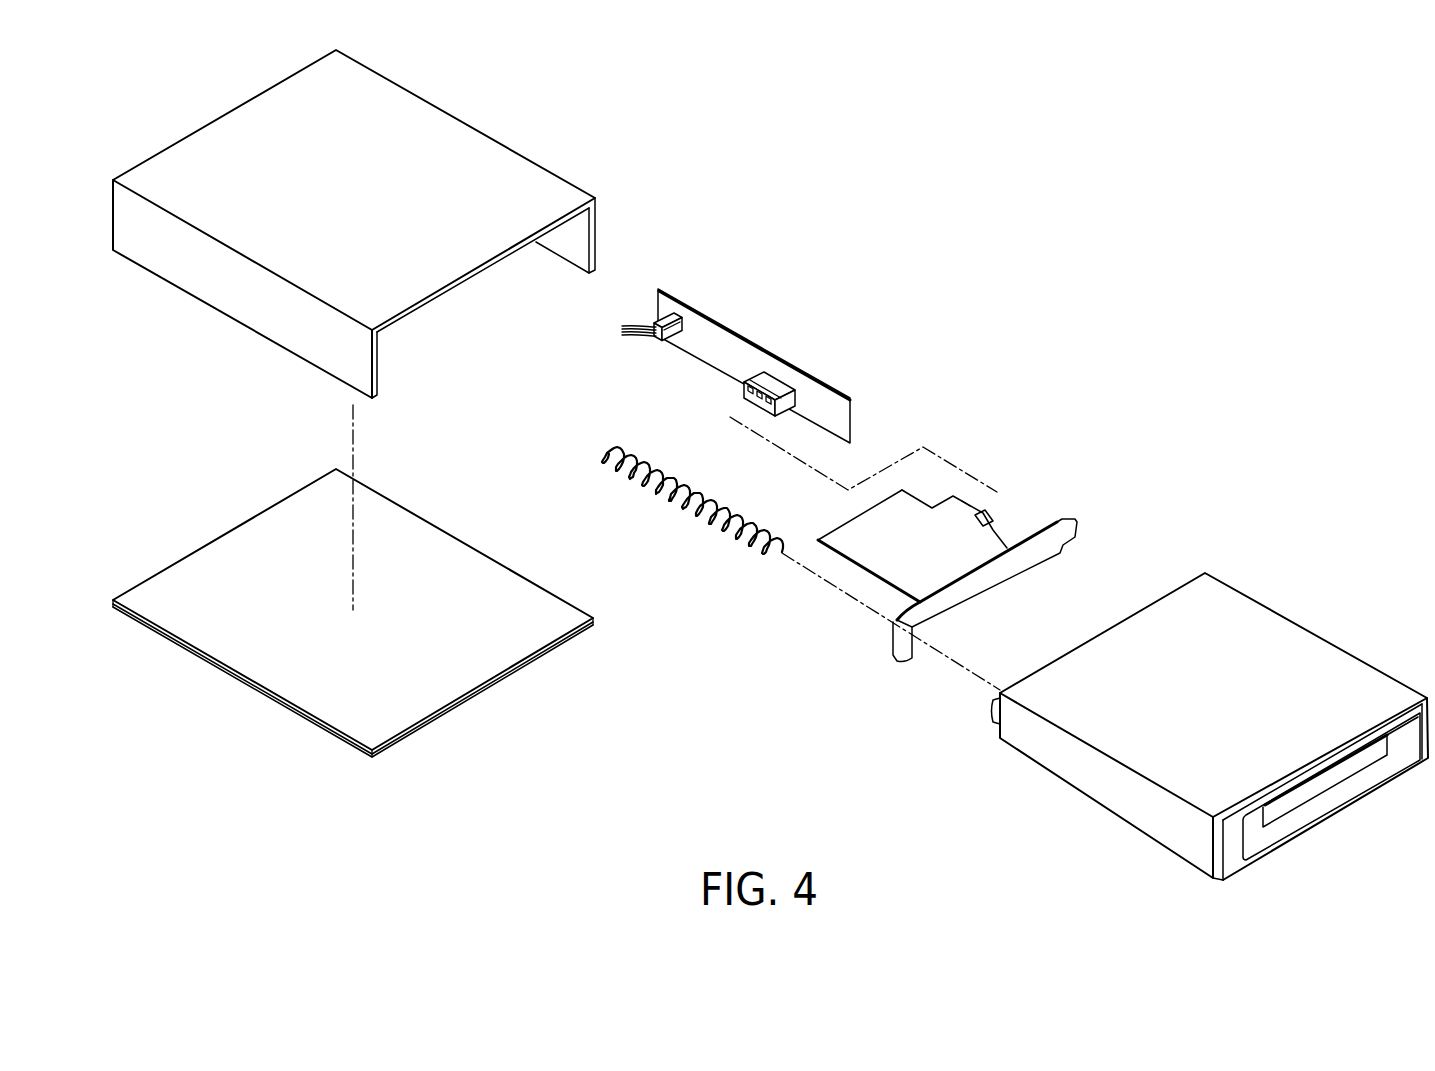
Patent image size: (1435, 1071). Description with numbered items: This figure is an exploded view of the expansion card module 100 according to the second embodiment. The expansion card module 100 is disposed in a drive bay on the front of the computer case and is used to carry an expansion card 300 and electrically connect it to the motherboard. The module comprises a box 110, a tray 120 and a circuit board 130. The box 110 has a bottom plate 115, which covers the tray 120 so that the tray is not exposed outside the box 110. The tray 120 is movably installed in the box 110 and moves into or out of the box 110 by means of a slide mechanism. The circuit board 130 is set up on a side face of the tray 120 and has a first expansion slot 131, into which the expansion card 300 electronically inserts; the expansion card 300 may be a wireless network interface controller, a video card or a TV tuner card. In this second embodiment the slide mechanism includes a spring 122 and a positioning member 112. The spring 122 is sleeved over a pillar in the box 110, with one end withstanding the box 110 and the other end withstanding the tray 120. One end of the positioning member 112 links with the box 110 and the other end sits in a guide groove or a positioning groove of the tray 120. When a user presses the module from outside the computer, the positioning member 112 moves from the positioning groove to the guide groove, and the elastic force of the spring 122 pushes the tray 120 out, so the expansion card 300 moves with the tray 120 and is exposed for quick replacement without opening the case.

The expansion card module 100 is at (1388, 88).
The box 110 is at (541, 146).
The positioning member 112 is at (993, 713).
The bottom plate 115 is at (249, 535).
The tray 120 is at (1341, 629).
The spring 122 is at (713, 528).
The circuit board 130 is at (720, 300).
The first expansion slot 131 is at (772, 383).
The expansion card 300 is at (983, 523).